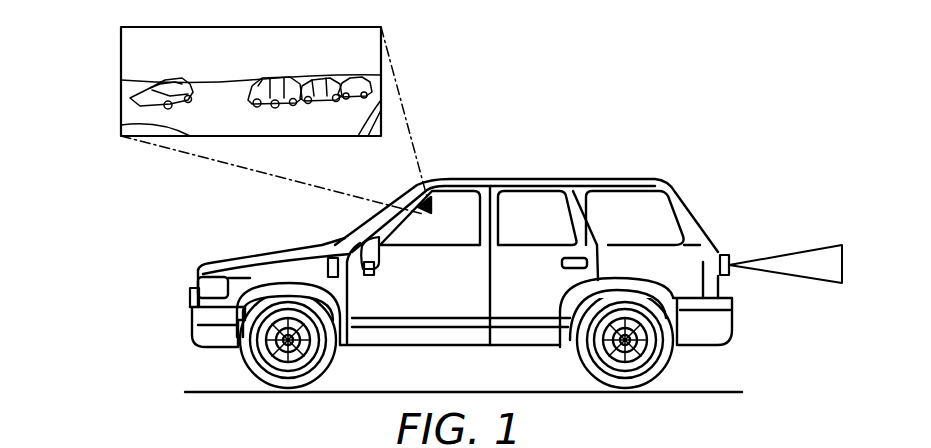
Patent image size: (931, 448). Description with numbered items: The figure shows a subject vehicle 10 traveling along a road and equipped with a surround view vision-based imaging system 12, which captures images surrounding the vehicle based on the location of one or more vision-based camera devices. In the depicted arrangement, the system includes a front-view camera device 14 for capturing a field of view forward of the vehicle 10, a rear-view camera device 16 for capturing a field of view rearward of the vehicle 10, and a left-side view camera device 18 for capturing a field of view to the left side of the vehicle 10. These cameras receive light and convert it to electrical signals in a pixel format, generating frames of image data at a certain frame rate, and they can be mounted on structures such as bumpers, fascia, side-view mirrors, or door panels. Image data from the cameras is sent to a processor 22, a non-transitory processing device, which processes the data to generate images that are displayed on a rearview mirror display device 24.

The subject vehicle 10 is at (585, 179).
The surround view vision-based imaging system 12 is at (772, 226).
The front-view camera device 14 is at (190, 295).
The rear-view camera device 16 is at (724, 255).
The left-side view camera device 18 is at (371, 275).
The processor 22 is at (327, 266).
The rearview mirror display device 24 is at (121, 68).